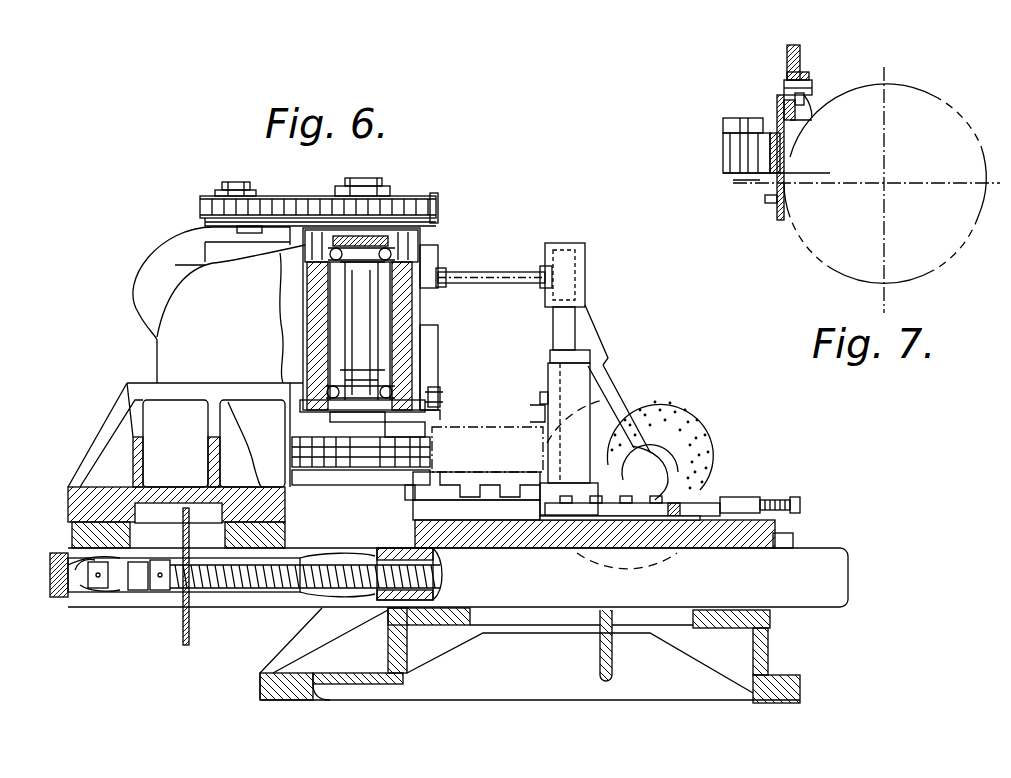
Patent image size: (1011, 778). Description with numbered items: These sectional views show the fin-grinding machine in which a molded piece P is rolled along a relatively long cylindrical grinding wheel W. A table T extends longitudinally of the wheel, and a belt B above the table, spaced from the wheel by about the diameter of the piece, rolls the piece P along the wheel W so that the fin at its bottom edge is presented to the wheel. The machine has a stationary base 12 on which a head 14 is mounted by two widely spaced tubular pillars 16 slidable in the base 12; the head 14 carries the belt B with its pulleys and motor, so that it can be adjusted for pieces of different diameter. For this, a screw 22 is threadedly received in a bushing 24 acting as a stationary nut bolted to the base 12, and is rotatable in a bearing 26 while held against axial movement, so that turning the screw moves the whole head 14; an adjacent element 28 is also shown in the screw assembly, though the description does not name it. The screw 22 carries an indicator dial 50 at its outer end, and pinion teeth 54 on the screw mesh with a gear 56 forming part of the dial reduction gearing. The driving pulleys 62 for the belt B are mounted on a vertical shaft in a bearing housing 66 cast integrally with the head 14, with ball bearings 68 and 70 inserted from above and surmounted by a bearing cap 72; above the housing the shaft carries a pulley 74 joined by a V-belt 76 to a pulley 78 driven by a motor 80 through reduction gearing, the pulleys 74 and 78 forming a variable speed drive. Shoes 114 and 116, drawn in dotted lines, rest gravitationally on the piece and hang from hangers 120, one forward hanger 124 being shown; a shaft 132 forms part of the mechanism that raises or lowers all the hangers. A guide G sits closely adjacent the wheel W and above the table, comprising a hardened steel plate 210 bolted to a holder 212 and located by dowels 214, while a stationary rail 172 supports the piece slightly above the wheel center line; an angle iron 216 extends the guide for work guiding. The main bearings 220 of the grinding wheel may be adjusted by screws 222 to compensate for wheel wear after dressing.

In FIG. 6, the base 12 is at (785, 675).
In FIG. 6, the head 14 is at (66, 500).
In FIG. 6, the tubular pillars 16 is at (834, 548).
In FIG. 6, the screw 22 is at (298, 598).
In FIG. 6, the bushing 24 is at (442, 598).
In FIG. 6, the bearing 26 is at (135, 592).
In FIG. 6, the thrust bearing 28 is at (170, 594).
In FIG. 6, the indicator dial 50 is at (60, 598).
In FIG. 6, the pinion teeth 54 is at (205, 596).
In FIG. 6, the gear 56 is at (186, 646).
In FIG. 6, the pulleys 62 is at (318, 438).
In FIG. 6, the bearing housing 66 is at (313, 298).
In FIG. 6, the ball bearing 68 is at (394, 392).
In FIG. 6, the ball bearing 70 is at (393, 260).
In FIG. 6, the bearing cap 72 is at (412, 240).
In FIG. 6, the pulley 74 is at (433, 197).
In FIG. 6, the V-belt 76 is at (385, 205).
In FIG. 6, the pulley 78 is at (226, 198).
In FIG. 6, the motor 80 is at (152, 266).
In FIG. 6, the shoe 114 is at (438, 415).
In FIG. 6, the shoe 116 is at (540, 416).
In FIG. 6, the hangers 120 is at (538, 398).
In FIG. 6, the forward hanger 124 is at (442, 396).
In FIG. 6, the shaft 132 is at (488, 272).
In FIG. 7, the stationary rail 172 is at (777, 205).
In FIG. 7, the hardened steel plate 210 is at (808, 110).
In FIG. 7, the holder 212 is at (797, 58).
In FIG. 7, the locating dowels 214 is at (806, 86).
In FIG. 6, the angle iron 216 is at (548, 454).
In FIG. 6, the main bearings 220 is at (672, 500).
In FIG. 6, the screws 222 is at (760, 506).
In FIG. 6, the belt B is at (392, 450).
In FIG. 7, the guide G is at (779, 115).
In FIG. 6, the molded piece P is at (487, 449).
In FIG. 7, the molded piece P is at (722, 152).
In FIG. 6, the table T is at (412, 494).
In FIG. 6, the grinding wheel W is at (686, 414).
In FIG. 7, the grinding wheel W is at (975, 130).